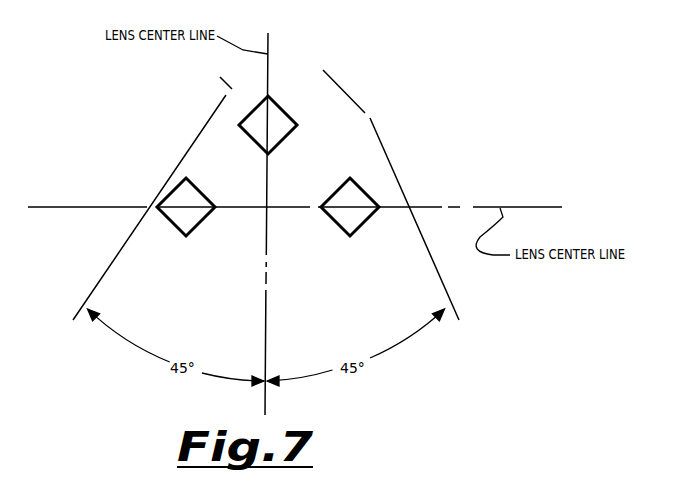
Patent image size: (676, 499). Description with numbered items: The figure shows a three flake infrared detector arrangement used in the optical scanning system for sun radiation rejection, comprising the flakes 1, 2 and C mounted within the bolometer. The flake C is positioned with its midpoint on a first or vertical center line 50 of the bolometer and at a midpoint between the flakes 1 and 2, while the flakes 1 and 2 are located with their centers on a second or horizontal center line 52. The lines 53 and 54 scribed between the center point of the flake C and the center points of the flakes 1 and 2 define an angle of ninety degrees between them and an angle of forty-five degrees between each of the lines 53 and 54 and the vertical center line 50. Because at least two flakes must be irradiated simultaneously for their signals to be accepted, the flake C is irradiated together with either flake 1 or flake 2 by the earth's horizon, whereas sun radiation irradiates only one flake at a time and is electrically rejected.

The flake 1 is at (136, 171).
The flake 2 is at (371, 172).
The flake C is at (306, 113).
The first or vertical center line 50 is at (268, 53).
The second or horizontal center line 52 is at (487, 207).
The line 53 is at (364, 292).
The line 54 is at (69, 254).